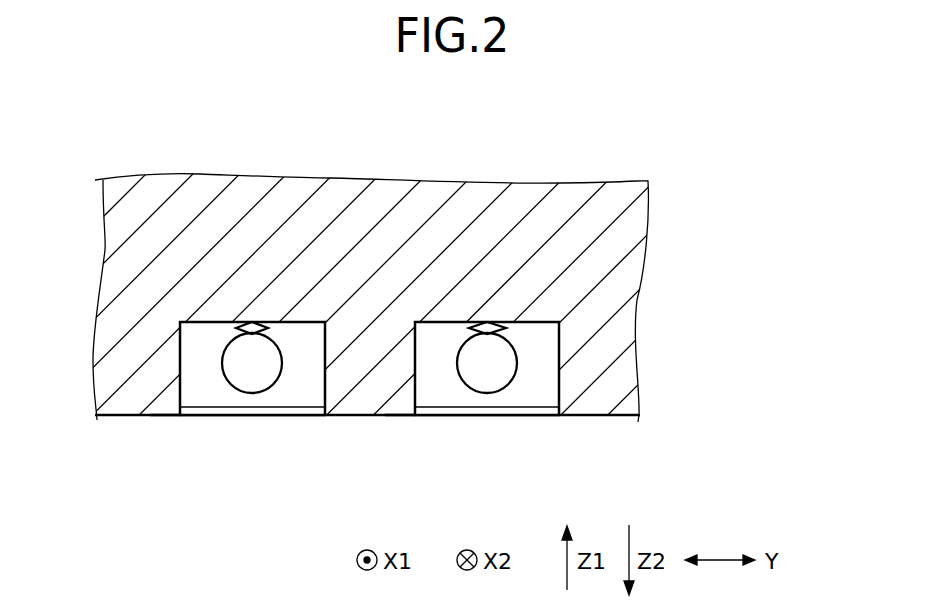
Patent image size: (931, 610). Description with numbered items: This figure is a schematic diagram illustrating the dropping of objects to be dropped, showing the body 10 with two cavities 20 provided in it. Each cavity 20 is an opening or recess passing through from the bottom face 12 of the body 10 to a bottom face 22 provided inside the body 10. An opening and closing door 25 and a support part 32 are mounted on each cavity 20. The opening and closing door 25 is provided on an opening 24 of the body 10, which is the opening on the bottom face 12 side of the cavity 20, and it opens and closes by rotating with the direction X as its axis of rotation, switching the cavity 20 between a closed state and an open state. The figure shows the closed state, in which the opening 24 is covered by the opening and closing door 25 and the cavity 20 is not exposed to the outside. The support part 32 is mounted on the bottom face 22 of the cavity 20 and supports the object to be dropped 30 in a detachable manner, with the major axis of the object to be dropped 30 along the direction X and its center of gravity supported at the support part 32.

The body 10 is at (551, 207).
The bottom face 12 is at (127, 416).
The cavity 20 is at (301, 388).
The bottom face 22 is at (303, 327).
The opening 24 is at (220, 412).
The opening and closing door 25 is at (192, 416).
The object to be dropped 30 is at (252, 365).
The support part 32 is at (252, 322).